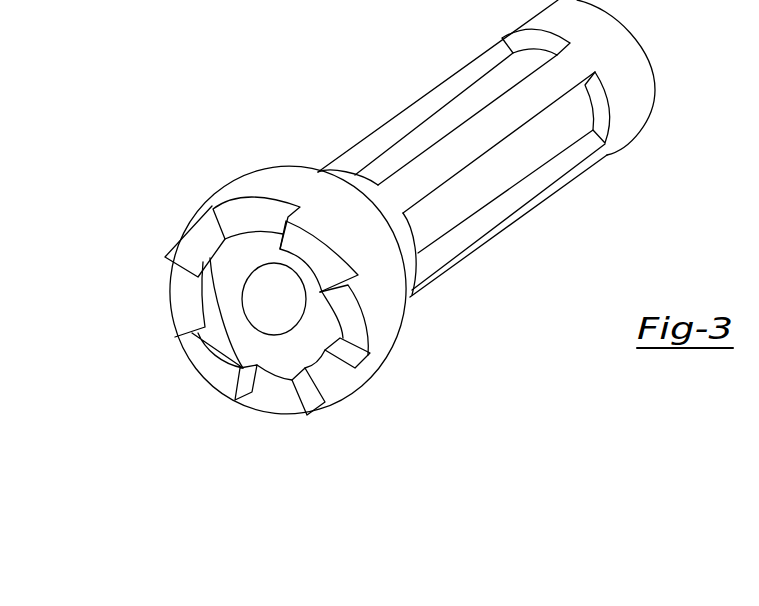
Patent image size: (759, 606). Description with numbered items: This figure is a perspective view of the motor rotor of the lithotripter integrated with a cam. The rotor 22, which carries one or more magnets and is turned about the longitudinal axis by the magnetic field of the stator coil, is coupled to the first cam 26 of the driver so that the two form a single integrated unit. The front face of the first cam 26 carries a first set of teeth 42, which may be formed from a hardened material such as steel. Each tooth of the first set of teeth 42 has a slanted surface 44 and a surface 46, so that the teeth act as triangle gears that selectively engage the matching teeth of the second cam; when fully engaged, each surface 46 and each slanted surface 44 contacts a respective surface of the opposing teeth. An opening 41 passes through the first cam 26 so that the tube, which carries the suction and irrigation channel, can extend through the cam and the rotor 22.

The rotor 22 is at (635, 95).
The first cam 26 is at (387, 310).
The opening 41 is at (263, 291).
The first set of teeth 42 is at (172, 317).
The slanted surface 44 is at (187, 323).
The surface 46 is at (190, 338).